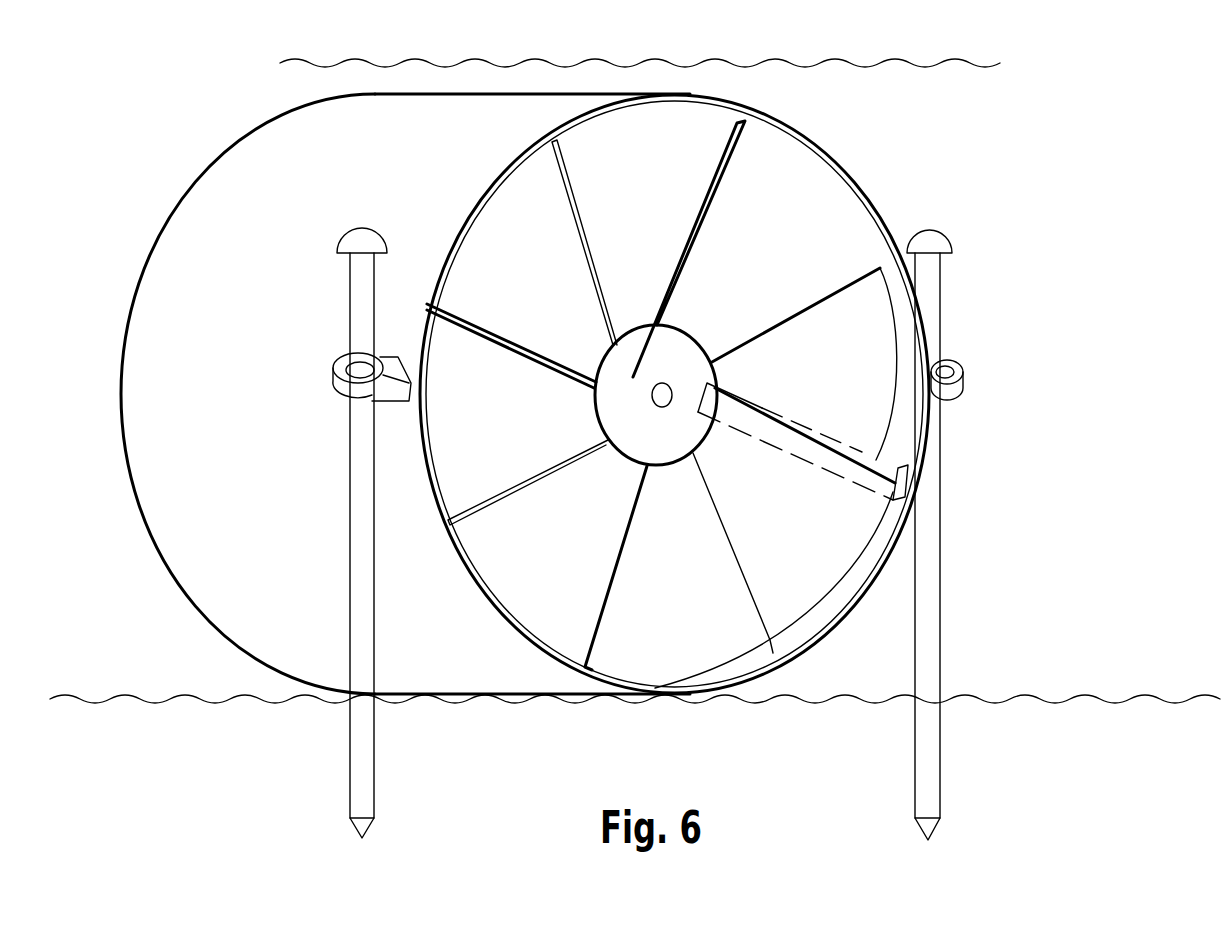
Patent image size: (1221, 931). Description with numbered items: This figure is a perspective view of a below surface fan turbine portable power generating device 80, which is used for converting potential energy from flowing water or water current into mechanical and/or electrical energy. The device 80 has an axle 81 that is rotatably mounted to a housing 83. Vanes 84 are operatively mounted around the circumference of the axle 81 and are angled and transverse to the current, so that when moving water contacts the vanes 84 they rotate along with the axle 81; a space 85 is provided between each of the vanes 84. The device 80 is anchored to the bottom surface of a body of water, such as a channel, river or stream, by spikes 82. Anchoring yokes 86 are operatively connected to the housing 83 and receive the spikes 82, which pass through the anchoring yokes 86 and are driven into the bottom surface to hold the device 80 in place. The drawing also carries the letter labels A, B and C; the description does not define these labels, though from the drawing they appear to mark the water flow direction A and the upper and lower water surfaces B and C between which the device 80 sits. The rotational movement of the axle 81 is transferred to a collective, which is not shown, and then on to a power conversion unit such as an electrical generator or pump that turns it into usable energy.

The below surface fan turbine portable power generating device 80 is at (755, 97).
The axle 81 is at (655, 405).
The spikes 82 is at (350, 590).
The housing 83 is at (850, 622).
The vanes 84 is at (895, 334).
The space 85 is at (898, 489).
The anchoring yokes 86 is at (330, 378).
The water flow direction A is at (971, 725).
The upper water level B is at (905, 62).
The lower water level C is at (837, 704).